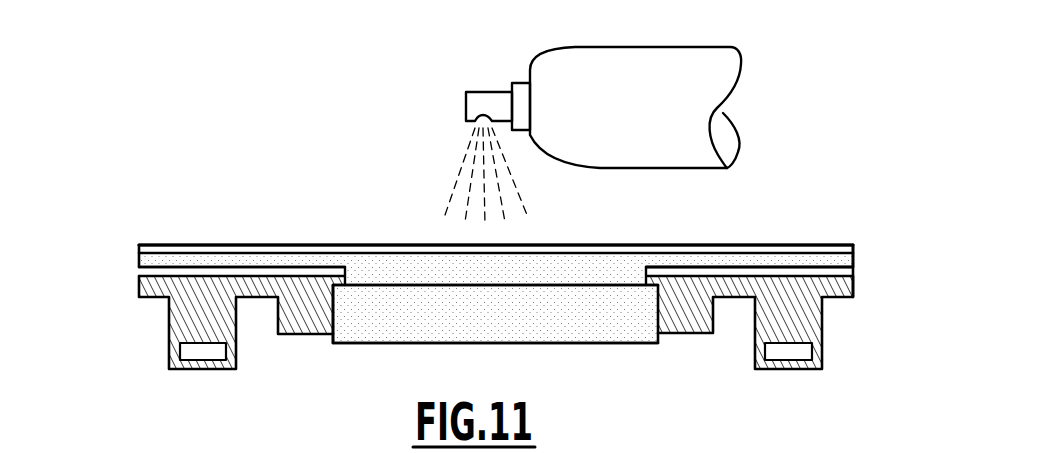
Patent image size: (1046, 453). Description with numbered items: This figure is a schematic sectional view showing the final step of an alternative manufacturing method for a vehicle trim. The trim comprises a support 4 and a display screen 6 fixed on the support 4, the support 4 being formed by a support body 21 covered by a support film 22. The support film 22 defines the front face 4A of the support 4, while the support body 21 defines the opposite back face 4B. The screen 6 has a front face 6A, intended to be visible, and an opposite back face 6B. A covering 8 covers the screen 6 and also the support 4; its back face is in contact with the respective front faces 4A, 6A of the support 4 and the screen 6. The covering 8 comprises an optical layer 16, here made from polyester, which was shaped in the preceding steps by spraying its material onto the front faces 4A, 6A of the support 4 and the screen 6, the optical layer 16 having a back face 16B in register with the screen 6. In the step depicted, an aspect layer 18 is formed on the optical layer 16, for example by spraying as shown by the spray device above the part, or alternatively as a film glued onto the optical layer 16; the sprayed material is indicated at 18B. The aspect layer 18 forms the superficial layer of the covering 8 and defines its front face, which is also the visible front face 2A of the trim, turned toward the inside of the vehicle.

The front face of the trim 2A is at (272, 247).
The support 4 is at (459, 279).
The front face of the support 4A is at (790, 268).
The back face of the support 4B is at (851, 298).
The display screen 6 is at (495, 340).
The front face of the screen 6A is at (570, 275).
The back face of the screen 6B is at (510, 345).
The covering 8 is at (460, 218).
The optical layer 16 is at (152, 259).
The back face of the optical layer 16B is at (610, 287).
The aspect layer 18 is at (198, 247).
The coating 18B is at (372, 253).
The support body 21 is at (152, 287).
The support film 22 is at (152, 275).